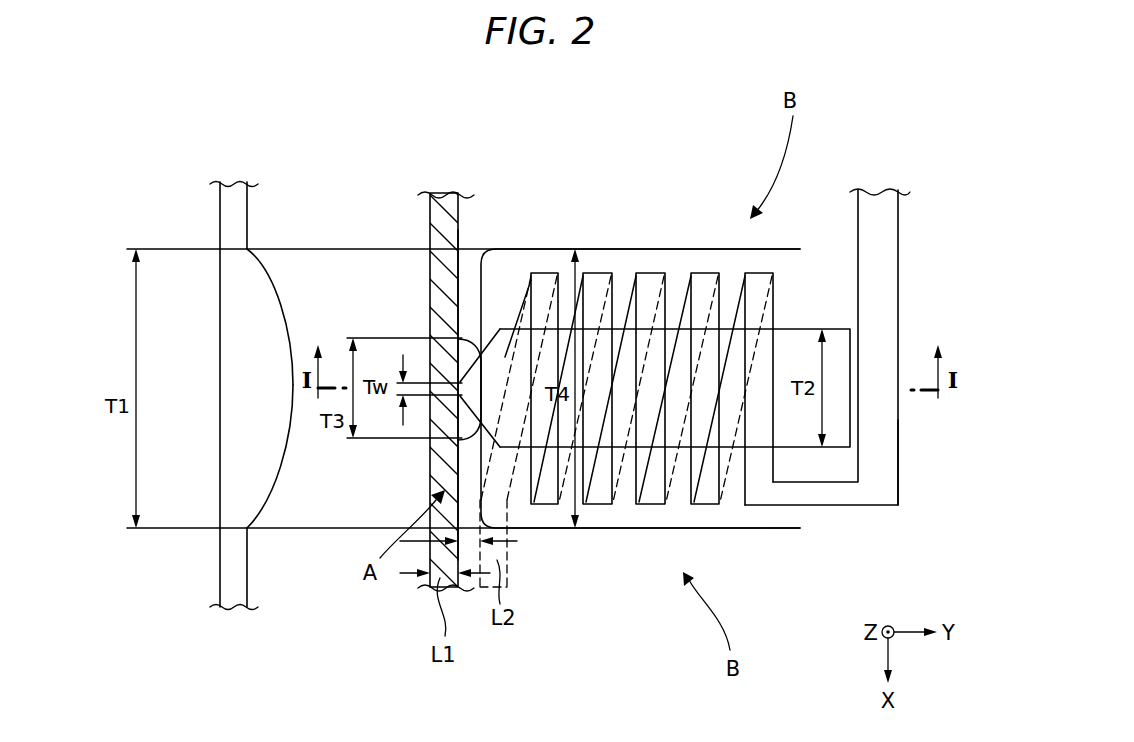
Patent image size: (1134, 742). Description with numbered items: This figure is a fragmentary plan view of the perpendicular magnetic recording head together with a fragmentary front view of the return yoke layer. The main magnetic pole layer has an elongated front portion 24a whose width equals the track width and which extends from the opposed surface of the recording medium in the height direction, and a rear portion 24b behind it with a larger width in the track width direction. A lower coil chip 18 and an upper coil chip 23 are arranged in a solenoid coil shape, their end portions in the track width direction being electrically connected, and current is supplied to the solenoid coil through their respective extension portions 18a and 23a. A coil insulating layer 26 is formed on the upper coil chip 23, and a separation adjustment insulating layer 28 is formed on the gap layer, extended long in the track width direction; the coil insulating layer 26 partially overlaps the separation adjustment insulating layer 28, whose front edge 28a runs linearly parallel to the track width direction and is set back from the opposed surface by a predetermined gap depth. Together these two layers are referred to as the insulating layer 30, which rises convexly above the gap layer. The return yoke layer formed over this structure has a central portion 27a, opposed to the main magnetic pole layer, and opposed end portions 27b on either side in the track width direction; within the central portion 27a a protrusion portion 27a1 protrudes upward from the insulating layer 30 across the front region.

The lower coil chip 18 is at (757, 276).
The extension portion 18a is at (503, 554).
The upper coil chip 23 is at (759, 497).
The extension portion 23a is at (884, 495).
The front portion 24a is at (467, 345).
The rear portion 24b is at (805, 436).
The coil insulating layer 26 is at (518, 270).
The central portion 27a is at (232, 318).
The protrusion portion 27a1 is at (252, 452).
The opposed end portion 27b is at (228, 212).
The separation adjustment insulating layer 28 is at (472, 330).
The front edge 28a is at (457, 292).
The insulating layer 30 is at (562, 119).